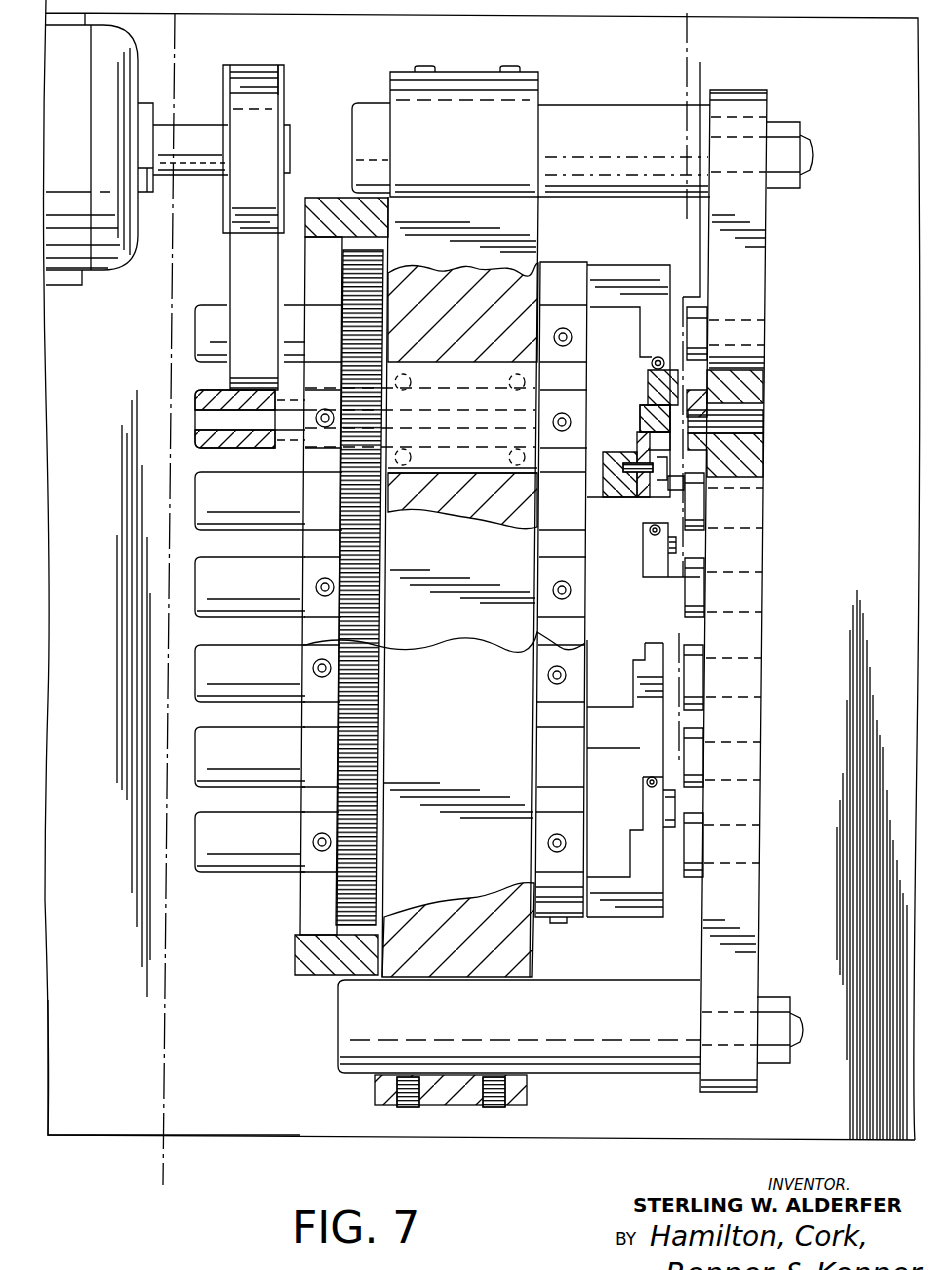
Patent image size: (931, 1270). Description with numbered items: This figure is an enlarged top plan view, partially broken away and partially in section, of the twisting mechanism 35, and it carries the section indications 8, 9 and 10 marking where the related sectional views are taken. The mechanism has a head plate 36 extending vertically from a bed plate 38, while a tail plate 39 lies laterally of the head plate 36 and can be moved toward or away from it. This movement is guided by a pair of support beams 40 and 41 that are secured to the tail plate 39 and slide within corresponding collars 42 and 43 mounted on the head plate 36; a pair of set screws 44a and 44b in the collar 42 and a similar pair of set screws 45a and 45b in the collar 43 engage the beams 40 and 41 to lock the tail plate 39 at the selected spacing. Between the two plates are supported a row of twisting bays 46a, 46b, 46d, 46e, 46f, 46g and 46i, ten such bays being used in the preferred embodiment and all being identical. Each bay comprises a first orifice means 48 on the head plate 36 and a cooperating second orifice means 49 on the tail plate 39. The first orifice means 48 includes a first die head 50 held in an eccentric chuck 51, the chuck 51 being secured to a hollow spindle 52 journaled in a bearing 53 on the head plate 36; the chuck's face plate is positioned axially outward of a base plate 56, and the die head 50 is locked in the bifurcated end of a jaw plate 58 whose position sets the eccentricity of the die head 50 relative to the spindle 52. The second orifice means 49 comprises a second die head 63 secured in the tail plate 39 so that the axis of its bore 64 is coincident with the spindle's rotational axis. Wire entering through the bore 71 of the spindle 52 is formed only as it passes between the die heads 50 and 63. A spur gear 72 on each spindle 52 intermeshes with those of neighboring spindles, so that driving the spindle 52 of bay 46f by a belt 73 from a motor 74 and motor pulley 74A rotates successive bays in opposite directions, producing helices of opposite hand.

The section line 8- 8 is at (135, 13).
The section line 9- 9 is at (728, 12).
The section line 10- 10 is at (678, 62).
The twisting mechanism 35 is at (126, 1229).
The head plate 36 is at (457, 958).
The bed plate 38 is at (273, 1117).
The tail plate 39 is at (738, 913).
The support beam 40 is at (586, 113).
The support beam 41 is at (603, 1063).
The collar 42 is at (477, 92).
The collar 43 is at (457, 1097).
The set screw 44a is at (425, 67).
The set screw 44b is at (510, 67).
The set screw 45a is at (405, 1107).
The set screw 45b is at (492, 1107).
The twisting bay 46a is at (163, 413).
The twisting bay 46b is at (158, 583).
The twisting bay 46d is at (160, 668).
The twisting bay 46e is at (158, 835).
The twisting bay 46f is at (168, 334).
The twisting bay 46g is at (165, 505).
The twisting bay 46i is at (155, 760).
The first orifice means 48 is at (628, 378).
The second orifice means 49 is at (713, 397).
The first die head 50 is at (640, 400).
The eccentric chuck 51 is at (631, 514).
The hollow spindle 52 is at (200, 312).
The bearing 53 is at (448, 464).
The base plate 56 is at (543, 497).
The jaw plate 58 is at (670, 480).
The second die head 63 is at (705, 447).
The bore 64 is at (735, 420).
The bore 71 is at (205, 413).
The spur gear 72 is at (378, 487).
The belt 73 is at (238, 253).
The motor 74 is at (107, 250).
The motor pulley 74A is at (290, 89).